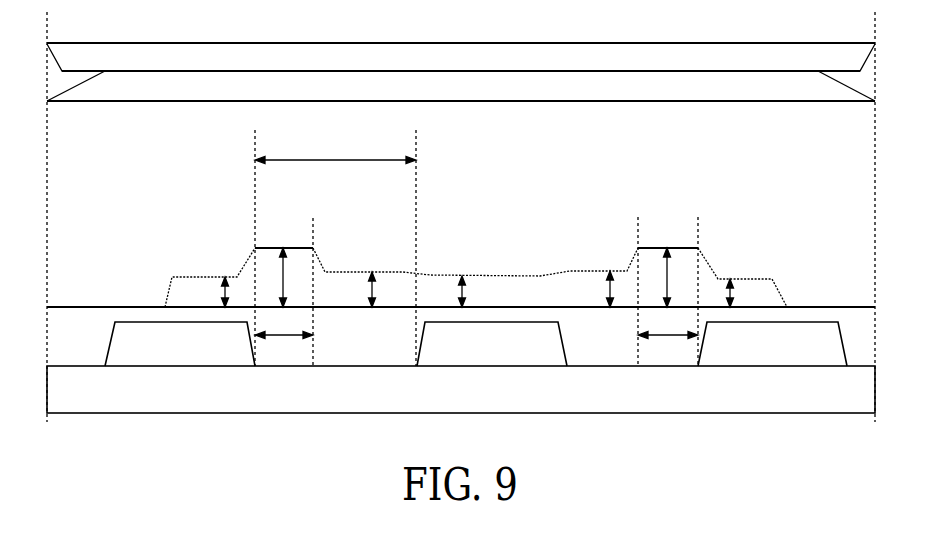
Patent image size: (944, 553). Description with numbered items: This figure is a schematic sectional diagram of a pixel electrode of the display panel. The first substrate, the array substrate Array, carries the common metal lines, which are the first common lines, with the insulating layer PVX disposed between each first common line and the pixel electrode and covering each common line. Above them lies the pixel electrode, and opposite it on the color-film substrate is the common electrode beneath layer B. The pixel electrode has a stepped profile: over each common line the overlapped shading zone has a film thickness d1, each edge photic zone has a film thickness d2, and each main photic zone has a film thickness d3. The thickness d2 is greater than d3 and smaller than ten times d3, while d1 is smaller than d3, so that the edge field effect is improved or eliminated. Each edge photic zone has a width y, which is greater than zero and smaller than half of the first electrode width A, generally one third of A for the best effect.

The black matrix layer B is at (461, 57).
The width of each of the first electrodes A is at (335, 149).
The first substrate Array is at (461, 389).
The insulating layer PVX is at (485, 347).
The width of each of the edge photic zones y is at (476, 345).
The film thickness of each of the overlapped shading zones d1 is at (477, 274).
The film thickness of each of the edge photic zones d2 is at (470, 260).
The film thickness of each of the main photic zones d3 is at (484, 273).